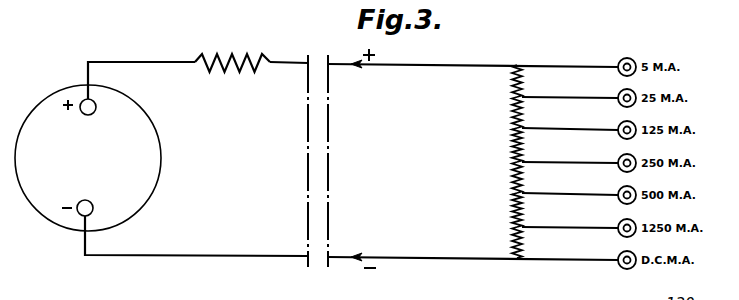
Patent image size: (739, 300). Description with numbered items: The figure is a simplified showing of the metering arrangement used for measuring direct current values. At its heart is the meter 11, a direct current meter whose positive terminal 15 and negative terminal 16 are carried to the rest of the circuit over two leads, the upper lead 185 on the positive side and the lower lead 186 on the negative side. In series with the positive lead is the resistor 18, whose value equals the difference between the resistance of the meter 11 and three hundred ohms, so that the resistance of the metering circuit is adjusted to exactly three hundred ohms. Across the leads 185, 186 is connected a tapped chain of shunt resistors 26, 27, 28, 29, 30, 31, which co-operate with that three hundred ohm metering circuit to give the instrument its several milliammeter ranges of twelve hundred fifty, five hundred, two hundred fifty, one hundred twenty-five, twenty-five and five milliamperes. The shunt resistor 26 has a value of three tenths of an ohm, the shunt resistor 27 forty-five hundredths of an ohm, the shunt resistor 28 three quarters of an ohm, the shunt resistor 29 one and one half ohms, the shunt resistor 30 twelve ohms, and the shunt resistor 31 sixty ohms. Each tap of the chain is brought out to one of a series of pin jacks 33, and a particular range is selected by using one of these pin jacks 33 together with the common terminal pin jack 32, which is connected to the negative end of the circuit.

The meter 11 is at (40, 198).
The positive terminal 15 is at (96, 108).
The negative terminal 16 is at (93, 208).
The resistor 18 is at (245, 70).
The positive supply lead 185 is at (427, 68).
The negative supply lead 186 is at (429, 257).
The shunt resistor 26 is at (522, 243).
The shunt resistor 27 is at (522, 215).
The shunt resistor 28 is at (522, 187).
The shunt resistor 29 is at (522, 152).
The shunt resistor 30 is at (522, 118).
The shunt resistor 31 is at (522, 82).
The common terminal pin jack 32 is at (622, 269).
The pin jacks 33 is at (634, 90).